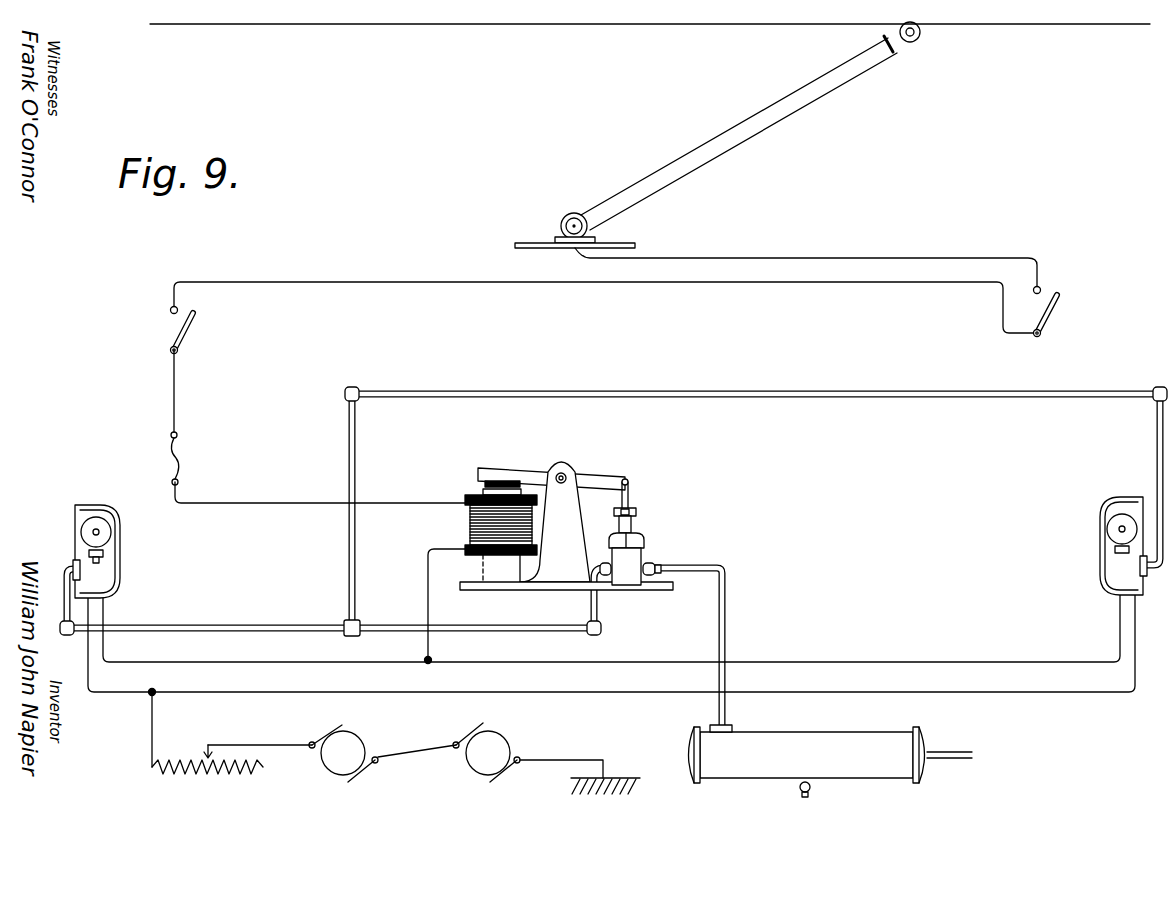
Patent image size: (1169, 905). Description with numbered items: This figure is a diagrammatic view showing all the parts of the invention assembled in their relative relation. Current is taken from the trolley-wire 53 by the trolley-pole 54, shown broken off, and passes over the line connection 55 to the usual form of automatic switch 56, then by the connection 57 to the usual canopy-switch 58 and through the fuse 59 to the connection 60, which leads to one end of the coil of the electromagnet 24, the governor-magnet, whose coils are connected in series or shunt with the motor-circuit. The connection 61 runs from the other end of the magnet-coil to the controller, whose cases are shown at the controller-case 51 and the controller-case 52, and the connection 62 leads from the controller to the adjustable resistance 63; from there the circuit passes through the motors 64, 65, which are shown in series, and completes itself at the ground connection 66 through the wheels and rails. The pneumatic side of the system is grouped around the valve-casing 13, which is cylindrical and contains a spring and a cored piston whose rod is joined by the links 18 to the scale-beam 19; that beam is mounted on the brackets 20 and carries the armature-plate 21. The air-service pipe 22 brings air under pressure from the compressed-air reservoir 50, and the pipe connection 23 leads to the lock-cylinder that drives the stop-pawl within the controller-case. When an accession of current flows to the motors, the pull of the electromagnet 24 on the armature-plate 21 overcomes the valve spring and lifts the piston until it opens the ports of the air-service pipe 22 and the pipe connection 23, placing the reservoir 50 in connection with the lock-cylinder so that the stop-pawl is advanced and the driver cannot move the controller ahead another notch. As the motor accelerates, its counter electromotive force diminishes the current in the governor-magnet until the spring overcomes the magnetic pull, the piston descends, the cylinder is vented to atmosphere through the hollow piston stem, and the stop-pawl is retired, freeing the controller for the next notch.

The valve-casing 13 is at (633, 560).
The links 18 is at (640, 492).
The scale-beam 19 is at (592, 477).
The brackets 20 is at (568, 573).
The armature-plate 21 is at (505, 468).
The air-service pipe 22 is at (725, 620).
The pipe connection 23 is at (347, 553).
The electromagnet 24 is at (468, 528).
The compressed-air reservoir 50 is at (808, 745).
The controller-case 51 is at (122, 560).
The controller-case 52 is at (1095, 550).
The trolley-wire 53 is at (650, 42).
The trolley-pole 54 is at (683, 152).
The line connection 55 is at (752, 259).
The automatic switch 56 is at (1060, 307).
The connection 57 is at (602, 293).
The canopy-switch 58 is at (162, 330).
The fuse 59 is at (183, 463).
The connection 60 is at (321, 489).
The connection 61 is at (421, 598).
The connection 62 is at (118, 702).
The adjustable resistance 63 is at (232, 777).
The motor 64 is at (382, 741).
The motor 65 is at (528, 744).
The ground connection 66 is at (608, 762).